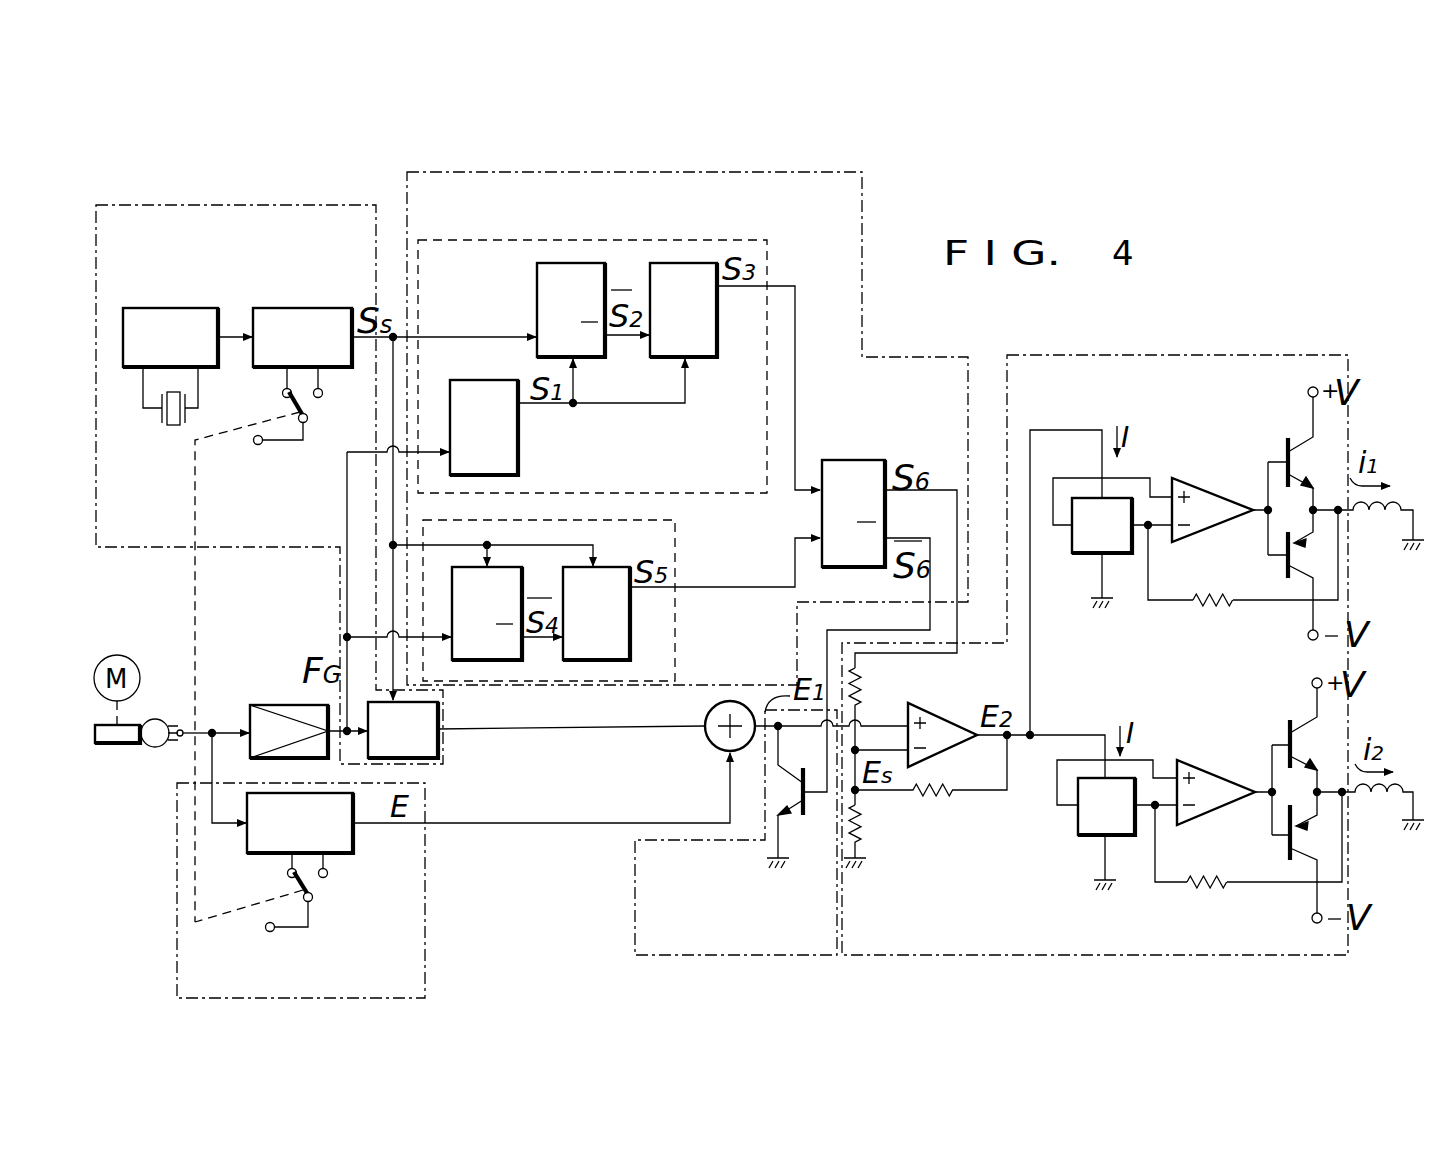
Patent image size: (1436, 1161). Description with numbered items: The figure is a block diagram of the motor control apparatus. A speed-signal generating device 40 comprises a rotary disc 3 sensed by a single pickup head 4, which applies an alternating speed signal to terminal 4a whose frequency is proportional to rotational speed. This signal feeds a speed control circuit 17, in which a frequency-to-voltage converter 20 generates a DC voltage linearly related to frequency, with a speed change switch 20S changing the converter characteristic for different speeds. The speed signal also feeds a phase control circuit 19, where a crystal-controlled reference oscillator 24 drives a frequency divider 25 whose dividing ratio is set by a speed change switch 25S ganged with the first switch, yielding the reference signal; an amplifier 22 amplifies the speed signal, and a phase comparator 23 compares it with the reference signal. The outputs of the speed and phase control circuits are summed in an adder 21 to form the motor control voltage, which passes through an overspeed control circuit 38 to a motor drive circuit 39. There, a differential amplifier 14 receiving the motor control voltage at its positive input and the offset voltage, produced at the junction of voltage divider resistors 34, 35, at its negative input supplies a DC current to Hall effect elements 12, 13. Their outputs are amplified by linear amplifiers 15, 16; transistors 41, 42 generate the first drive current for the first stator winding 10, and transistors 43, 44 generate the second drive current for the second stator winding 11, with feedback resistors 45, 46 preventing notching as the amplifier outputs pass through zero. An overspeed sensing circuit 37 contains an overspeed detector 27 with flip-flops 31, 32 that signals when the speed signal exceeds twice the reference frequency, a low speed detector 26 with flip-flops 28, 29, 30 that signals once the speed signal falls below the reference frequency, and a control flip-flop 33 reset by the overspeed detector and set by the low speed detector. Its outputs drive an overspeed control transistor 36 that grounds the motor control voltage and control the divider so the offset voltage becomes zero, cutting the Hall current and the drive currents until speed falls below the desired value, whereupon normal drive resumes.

The rotary disc 3 is at (106, 742).
The pickup head 4 is at (164, 736).
The terminal 4a is at (189, 732).
The first stator winding 10 is at (1382, 530).
The second stator winding 11 is at (1384, 810).
The Hall effect element 12 is at (1084, 552).
The Hall effect element 13 is at (1088, 836).
The differential amplifier 14 is at (946, 748).
The linear amplifier 15 is at (1247, 578).
The linear amplifier 16 is at (1246, 857).
The speed control circuit 17 is at (176, 1000).
The phase control circuit 19 is at (134, 552).
The frequency-to-voltage converter 20 is at (340, 858).
The speed change switch 20S is at (316, 900).
The adder 21 is at (718, 744).
The amplifier 22 is at (260, 704).
The phase comparator 23 is at (430, 760).
The reference oscillator 24 is at (173, 309).
The frequency divider 25 is at (310, 309).
The speed change switch 25S is at (310, 412).
The low speed detector 26 is at (738, 494).
The overspeed detector 27 is at (675, 633).
The flip-flop 28 is at (518, 450).
The flip-flop 29 is at (535, 292).
The flip-flop 30 is at (700, 357).
The flip-flop 31 is at (490, 660).
The flip-flop 32 is at (600, 660).
The control flip-flop 33 is at (850, 460).
The voltage divider resistor 34 is at (860, 674).
The voltage divider resistor 35 is at (864, 824).
The overspeed control transistor 36 is at (812, 812).
The overspeed sensing circuit 37 is at (866, 195).
The overspeed control circuit 38 is at (660, 955).
The motor drive circuit 39 is at (1328, 353).
The speed-signal generating device 40 is at (150, 758).
The transistor 41 is at (1286, 450).
The transistor 42 is at (1298, 585).
The transistor 43 is at (1290, 728).
The transistor 44 is at (1300, 862).
The feedback resistor 45 is at (1198, 606).
The feedback resistor 46 is at (1206, 886).